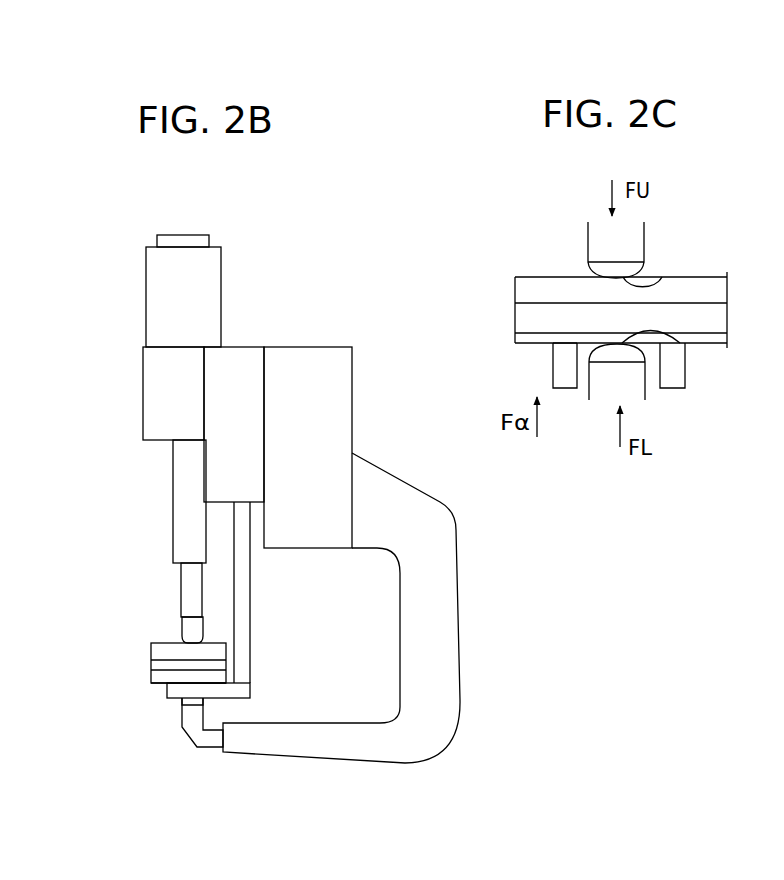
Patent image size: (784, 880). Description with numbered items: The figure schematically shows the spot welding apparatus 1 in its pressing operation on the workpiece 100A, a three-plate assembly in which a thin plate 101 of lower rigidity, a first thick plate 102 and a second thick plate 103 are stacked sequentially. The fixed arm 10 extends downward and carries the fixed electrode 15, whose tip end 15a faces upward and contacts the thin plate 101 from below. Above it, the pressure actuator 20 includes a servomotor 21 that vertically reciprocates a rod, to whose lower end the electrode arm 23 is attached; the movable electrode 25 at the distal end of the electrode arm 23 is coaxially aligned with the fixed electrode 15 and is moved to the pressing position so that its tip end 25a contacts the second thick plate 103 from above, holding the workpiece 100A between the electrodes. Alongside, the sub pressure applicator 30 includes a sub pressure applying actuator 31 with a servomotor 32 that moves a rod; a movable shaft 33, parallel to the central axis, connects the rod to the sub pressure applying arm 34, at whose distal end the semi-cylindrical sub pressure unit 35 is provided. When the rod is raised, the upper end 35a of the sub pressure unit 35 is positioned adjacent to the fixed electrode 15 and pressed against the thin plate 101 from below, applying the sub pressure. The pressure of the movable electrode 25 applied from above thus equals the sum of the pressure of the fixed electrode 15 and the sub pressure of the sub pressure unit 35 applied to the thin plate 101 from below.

In FIG. 2B, the spot welding apparatus 1 is at (338, 314).
In FIG. 2B, the fixed arm 10 is at (452, 627).
In FIG. 2B, the fixed electrode 15 is at (193, 703).
In FIG. 2C, the fixed electrode 15 is at (682, 387).
In FIG. 2C, the tip end 15a is at (680, 332).
In FIG. 2B, the pressure actuator 20 is at (137, 308).
In FIG. 2B, the servomotor 21 is at (157, 272).
In FIG. 2B, the electrode arm 23 is at (183, 468).
In FIG. 2B, the movable electrode 25 is at (183, 625).
In FIG. 2C, the movable electrode 25 is at (666, 231).
In FIG. 2C, the tip end of movable electrode 25a is at (648, 280).
In FIG. 2B, the sub pressure applicator 30 is at (262, 613).
In FIG. 2B, the sub pressure applying actuator 31 is at (248, 347).
In FIG. 2B, the servomotor 32 is at (228, 357).
In FIG. 2B, the movable shaft 33 is at (243, 583).
In FIG. 2B, the sub pressure applying arm 34 is at (227, 697).
In FIG. 2B, the sub pressure unit 35 is at (182, 693).
In FIG. 2C, the sub pressure unit 35 is at (574, 406).
In FIG. 2C, the upper end 35a is at (557, 353).
In FIG. 2B, the workpiece 100A is at (129, 647).
In FIG. 2C, the workpiece 100A is at (589, 287).
In FIG. 2B, the thin plate 101 is at (160, 683).
In FIG. 2C, the thin plate 101 is at (527, 340).
In FIG. 2B, the first thick plate 102 is at (158, 668).
In FIG. 2C, the first thick plate 102 is at (530, 322).
In FIG. 2B, the second thick plate 103 is at (153, 653).
In FIG. 2C, the second thick plate 103 is at (530, 295).